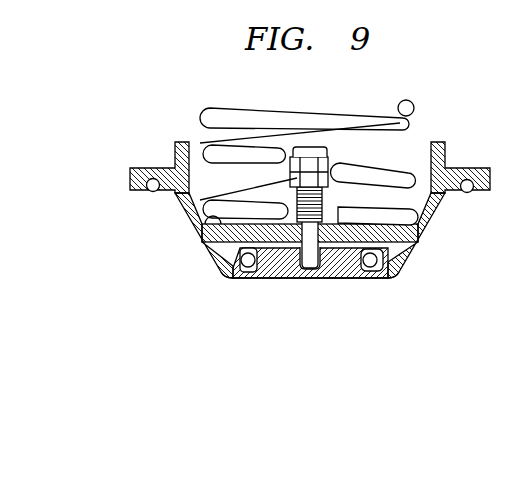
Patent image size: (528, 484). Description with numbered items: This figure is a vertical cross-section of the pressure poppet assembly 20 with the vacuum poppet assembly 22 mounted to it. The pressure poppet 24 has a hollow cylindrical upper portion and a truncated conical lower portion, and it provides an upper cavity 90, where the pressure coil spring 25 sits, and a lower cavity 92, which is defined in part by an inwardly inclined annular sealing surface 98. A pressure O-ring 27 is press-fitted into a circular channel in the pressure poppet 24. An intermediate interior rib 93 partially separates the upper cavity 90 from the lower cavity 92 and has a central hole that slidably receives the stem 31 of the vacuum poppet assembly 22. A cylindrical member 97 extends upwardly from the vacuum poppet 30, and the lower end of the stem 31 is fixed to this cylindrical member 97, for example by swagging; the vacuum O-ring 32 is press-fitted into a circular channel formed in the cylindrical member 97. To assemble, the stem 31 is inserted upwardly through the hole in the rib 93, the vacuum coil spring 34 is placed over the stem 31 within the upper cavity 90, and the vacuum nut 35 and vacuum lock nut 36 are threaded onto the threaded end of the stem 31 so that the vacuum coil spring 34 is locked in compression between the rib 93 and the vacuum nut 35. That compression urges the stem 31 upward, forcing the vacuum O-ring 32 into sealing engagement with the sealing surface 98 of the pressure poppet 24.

The pressure poppet assembly 20 is at (187, 235).
The vacuum poppet assembly 22 is at (249, 293).
The pressure poppet 24 is at (142, 146).
The pressure coil spring 25 is at (358, 110).
The pressure O-ring 27 is at (147, 193).
The vacuum poppet 30 is at (373, 290).
The stem 31 is at (323, 250).
The vacuum O-ring 32 is at (378, 258).
The vacuum coil spring 34 is at (333, 197).
The vacuum nut 35 is at (323, 200).
The vacuum lock nut 36 is at (320, 146).
The upper cavity 90 is at (222, 191).
The lower cavity 92 is at (272, 247).
The intermediate interior rib 93 is at (347, 247).
The cylindrical member 97 is at (245, 249).
The annular sealing surface 98 is at (367, 240).